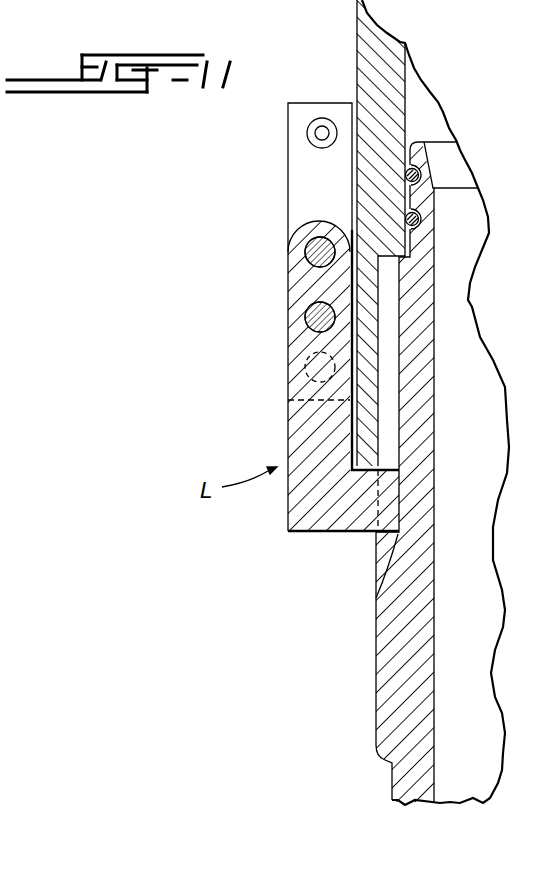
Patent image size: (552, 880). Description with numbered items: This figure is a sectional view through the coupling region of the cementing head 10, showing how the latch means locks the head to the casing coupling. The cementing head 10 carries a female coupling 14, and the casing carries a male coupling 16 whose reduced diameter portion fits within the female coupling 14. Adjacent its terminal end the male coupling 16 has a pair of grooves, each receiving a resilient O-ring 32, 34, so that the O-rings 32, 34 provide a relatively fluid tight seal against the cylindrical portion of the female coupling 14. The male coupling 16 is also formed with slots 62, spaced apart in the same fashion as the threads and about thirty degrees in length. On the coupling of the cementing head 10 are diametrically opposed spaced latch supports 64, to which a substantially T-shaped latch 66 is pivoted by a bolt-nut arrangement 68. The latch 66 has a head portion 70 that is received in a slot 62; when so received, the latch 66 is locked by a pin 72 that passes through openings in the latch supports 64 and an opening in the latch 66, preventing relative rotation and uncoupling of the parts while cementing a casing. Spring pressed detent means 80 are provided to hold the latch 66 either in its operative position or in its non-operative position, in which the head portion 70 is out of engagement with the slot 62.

The cementing head 10 is at (438, 77).
The female coupling 14 is at (349, 72).
The male coupling 16 is at (368, 657).
The O-ring 32 is at (419, 219).
The O-ring 34 is at (419, 176).
The slot 62 is at (387, 563).
The latch support 64 is at (305, 155).
The latch 66 is at (288, 430).
The bolt-nut arrangement 68 is at (305, 252).
The head portion 70 is at (323, 525).
The pin 72 is at (305, 317).
The detent means 80 is at (318, 131).